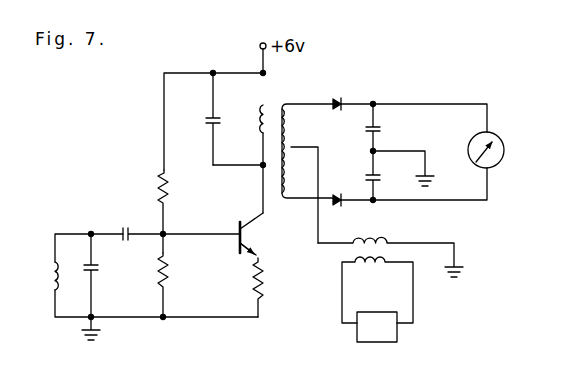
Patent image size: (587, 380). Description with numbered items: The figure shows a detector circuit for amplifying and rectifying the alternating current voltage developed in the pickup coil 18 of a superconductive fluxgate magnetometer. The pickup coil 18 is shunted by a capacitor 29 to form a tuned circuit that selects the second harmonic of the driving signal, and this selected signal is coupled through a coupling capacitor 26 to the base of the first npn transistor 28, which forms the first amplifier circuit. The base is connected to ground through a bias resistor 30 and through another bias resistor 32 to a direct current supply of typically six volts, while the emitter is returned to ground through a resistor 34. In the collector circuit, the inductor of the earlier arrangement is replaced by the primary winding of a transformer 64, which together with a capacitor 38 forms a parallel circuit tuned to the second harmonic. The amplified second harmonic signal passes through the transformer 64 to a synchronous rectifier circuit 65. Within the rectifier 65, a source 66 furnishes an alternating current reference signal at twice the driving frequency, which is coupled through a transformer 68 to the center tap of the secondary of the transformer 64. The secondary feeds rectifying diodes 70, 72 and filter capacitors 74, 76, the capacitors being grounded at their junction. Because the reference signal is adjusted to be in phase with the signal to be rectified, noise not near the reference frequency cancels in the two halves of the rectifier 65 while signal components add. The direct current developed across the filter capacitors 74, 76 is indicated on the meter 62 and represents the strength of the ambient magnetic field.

The pickup coil 18 is at (52, 265).
The coupling capacitor 26 is at (124, 230).
The first npn transistor 28 is at (261, 241).
The first transistor 29 is at (96, 272).
The bias resistor 30 is at (168, 280).
The bias resistor 32 is at (160, 187).
The resistor 34 is at (263, 301).
The capacitor 38 is at (208, 116).
The meter 62 is at (496, 164).
The transformer 64 is at (279, 102).
The synchronous rectifier circuit 65 is at (422, 86).
The source 66 is at (396, 336).
The transformer 68 is at (409, 258).
The rectifying diode 70 is at (337, 97).
The rectifying diode 72 is at (335, 193).
The filter capacitor 74 is at (378, 131).
The filter capacitor 76 is at (378, 178).